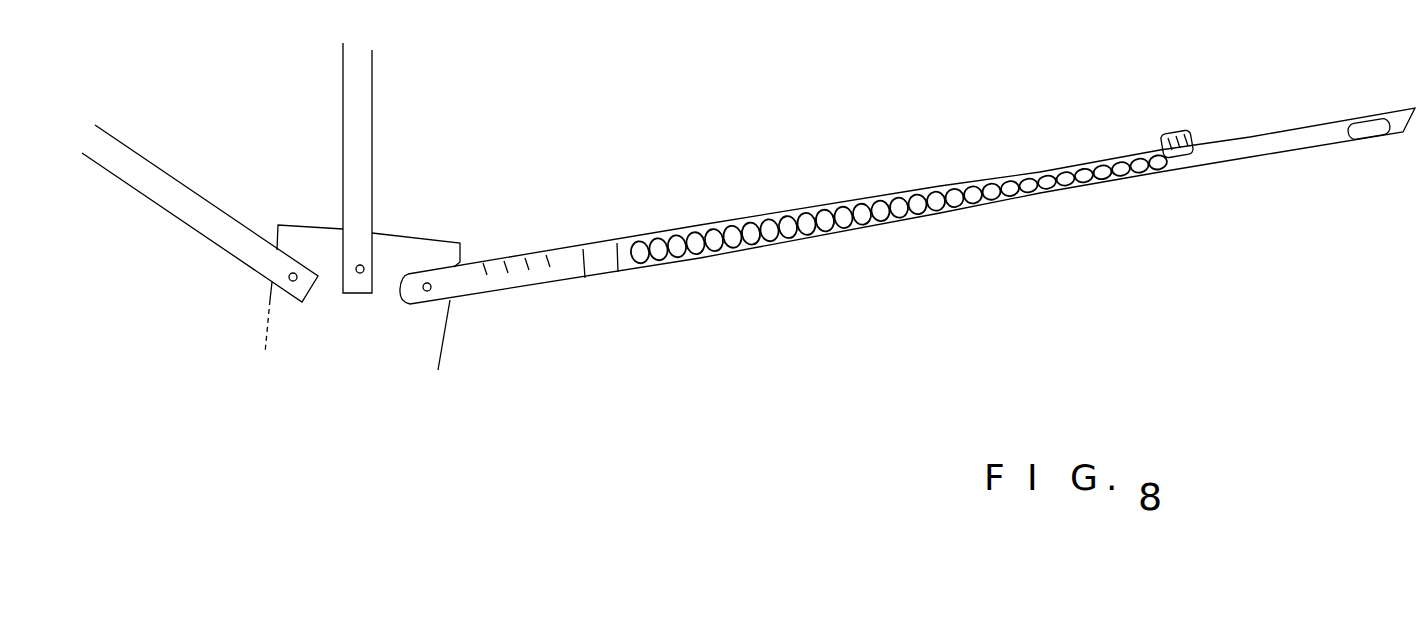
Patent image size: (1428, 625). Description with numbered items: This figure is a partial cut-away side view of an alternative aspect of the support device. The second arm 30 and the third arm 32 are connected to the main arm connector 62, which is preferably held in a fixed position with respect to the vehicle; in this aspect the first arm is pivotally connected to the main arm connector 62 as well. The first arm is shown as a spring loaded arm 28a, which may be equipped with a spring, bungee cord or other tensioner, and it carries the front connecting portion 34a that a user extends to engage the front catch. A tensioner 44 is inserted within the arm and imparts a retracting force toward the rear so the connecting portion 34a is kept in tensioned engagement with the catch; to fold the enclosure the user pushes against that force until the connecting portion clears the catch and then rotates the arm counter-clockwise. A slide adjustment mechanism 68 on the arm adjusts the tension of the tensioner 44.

The third arm 32 is at (199, 218).
The second arm 30 is at (362, 182).
The main arm connector 62 is at (378, 345).
The connecting portion 34a is at (1283, 135).
The spring loaded arm 28a is at (565, 221).
The tensioner 44 is at (763, 222).
The slide adjustment mechanism 68 is at (1175, 133).